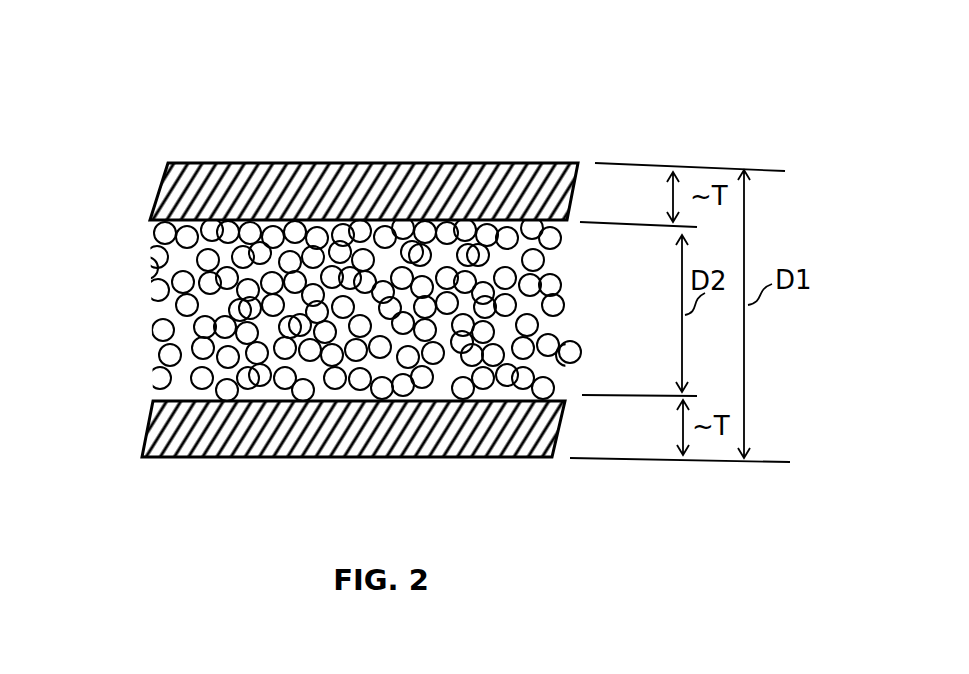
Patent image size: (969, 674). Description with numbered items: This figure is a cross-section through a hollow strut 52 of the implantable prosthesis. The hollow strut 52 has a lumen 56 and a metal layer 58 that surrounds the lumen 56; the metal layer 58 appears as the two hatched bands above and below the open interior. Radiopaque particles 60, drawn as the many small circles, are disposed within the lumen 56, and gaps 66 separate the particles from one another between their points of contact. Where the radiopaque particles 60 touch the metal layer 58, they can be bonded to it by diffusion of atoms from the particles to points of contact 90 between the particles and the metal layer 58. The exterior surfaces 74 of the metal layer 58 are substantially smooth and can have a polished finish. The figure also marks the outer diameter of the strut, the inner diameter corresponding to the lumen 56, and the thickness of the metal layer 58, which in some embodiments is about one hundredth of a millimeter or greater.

The hollow strut 52 is at (433, 75).
The lumen 56 is at (115, 225).
The metal layer 58 is at (315, 311).
The radiopaque particles 60 is at (557, 338).
The gaps 66 is at (372, 368).
The exterior surfaces 74 is at (527, 163).
The points of contact 90 is at (225, 386).